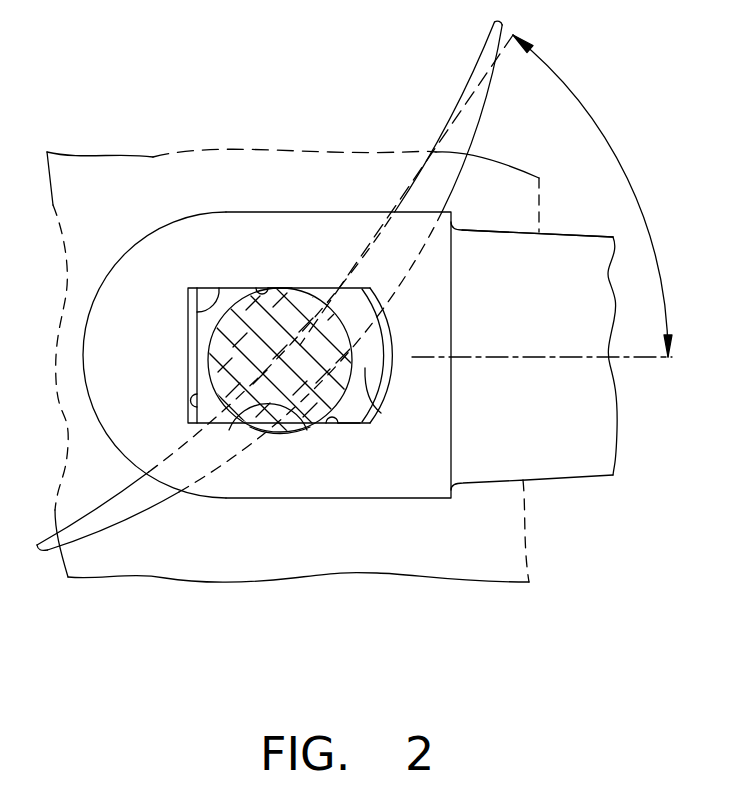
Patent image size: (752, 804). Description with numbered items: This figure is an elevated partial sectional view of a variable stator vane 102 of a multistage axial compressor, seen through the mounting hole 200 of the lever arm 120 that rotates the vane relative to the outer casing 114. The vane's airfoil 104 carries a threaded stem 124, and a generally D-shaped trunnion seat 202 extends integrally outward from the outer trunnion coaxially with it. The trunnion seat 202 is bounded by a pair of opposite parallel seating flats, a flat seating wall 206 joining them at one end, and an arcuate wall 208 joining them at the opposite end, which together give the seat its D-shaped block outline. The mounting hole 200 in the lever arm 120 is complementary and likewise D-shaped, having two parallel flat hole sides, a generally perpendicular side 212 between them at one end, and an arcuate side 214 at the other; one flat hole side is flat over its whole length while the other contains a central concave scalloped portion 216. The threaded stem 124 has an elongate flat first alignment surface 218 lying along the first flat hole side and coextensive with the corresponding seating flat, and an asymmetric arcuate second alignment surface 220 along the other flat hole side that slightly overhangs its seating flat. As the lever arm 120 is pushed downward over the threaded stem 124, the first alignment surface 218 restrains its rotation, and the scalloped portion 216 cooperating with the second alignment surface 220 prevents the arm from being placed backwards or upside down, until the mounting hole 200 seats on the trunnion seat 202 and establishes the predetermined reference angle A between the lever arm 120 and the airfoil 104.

The variable stator vane 102 is at (268, 257).
The airfoil 104 is at (147, 515).
The outer casing 114 is at (150, 157).
The lever arm 120 is at (581, 231).
The threaded stem 124 is at (282, 315).
The mounting hole 200 is at (190, 287).
The trunnion seat 202 is at (382, 411).
The flat seating wall 206 is at (197, 365).
The arcuate wall 208 is at (385, 378).
The perpendicular side 212 is at (190, 398).
The arcuate side 214 is at (396, 332).
The scalloped portion 216 is at (276, 420).
The first alignment surface 218 is at (255, 290).
The second alignment surface 220 is at (215, 430).
The reference angle A is at (619, 157).